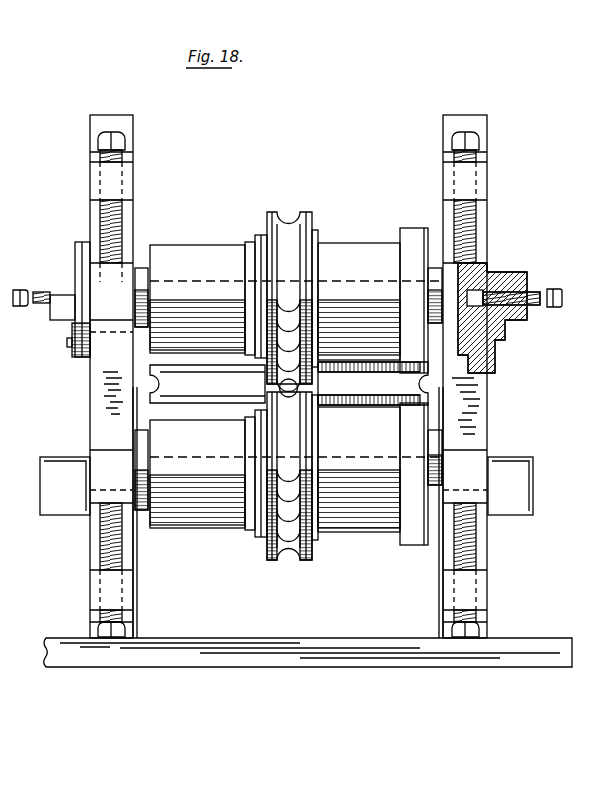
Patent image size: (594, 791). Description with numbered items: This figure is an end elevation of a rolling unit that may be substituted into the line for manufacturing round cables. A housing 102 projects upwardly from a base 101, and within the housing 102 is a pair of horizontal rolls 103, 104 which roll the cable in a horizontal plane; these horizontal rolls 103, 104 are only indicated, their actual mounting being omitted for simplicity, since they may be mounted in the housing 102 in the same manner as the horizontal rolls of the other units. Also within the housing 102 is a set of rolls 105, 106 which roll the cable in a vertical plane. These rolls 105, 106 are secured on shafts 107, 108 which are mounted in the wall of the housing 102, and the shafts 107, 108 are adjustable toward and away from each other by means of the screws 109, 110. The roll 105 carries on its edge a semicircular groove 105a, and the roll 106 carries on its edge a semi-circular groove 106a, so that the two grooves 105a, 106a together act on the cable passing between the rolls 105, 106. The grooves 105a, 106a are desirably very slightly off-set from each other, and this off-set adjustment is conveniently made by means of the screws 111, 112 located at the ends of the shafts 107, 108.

The base 101 is at (271, 667).
The housing 102 is at (487, 413).
The horizontal roll 103 is at (353, 405).
The horizontal roll 104 is at (193, 404).
The roll 105 is at (299, 496).
The semicircular groove 105a is at (282, 561).
The roll 106 is at (304, 287).
The semi-circular groove 106a is at (290, 212).
The shaft 107 is at (142, 510).
The shaft 108 is at (143, 268).
The screw 109 is at (107, 638).
The screw 110 is at (124, 144).
The screw 111 is at (18, 292).
The screw 112 is at (553, 290).